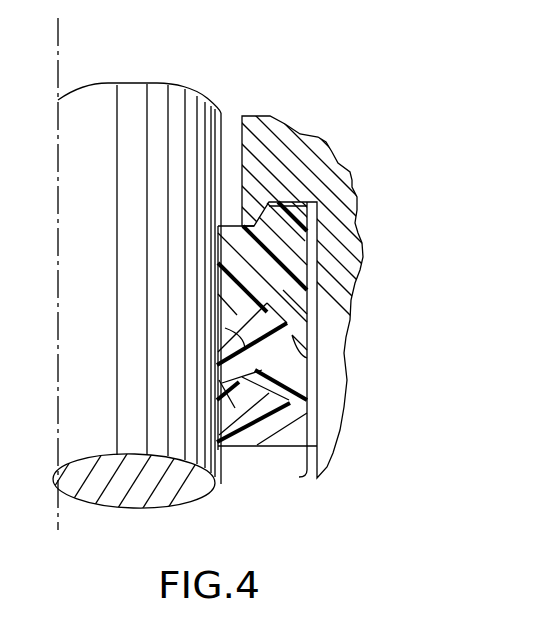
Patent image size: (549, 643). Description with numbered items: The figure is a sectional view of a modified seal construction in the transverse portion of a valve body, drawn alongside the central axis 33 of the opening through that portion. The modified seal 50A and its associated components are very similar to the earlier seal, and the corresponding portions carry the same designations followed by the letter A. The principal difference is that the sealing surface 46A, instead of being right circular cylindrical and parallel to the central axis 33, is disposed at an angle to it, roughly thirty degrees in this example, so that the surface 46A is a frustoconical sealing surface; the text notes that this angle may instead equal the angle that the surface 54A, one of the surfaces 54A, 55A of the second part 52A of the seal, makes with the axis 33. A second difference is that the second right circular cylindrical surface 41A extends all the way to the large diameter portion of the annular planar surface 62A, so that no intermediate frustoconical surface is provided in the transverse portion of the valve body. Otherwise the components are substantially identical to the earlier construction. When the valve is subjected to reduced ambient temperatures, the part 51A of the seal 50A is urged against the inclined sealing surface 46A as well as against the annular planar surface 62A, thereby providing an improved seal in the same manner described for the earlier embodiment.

The central axis 33 is at (60, 78).
The sealing surface 46A is at (246, 214).
The annular planar surface 62A is at (350, 178).
The part 51A is at (300, 217).
The seal 50A is at (310, 257).
The second part 52A is at (292, 298).
The surface 54A is at (247, 349).
The surface 55A is at (305, 351).
The second right circular cylindrical surface 41A is at (310, 462).